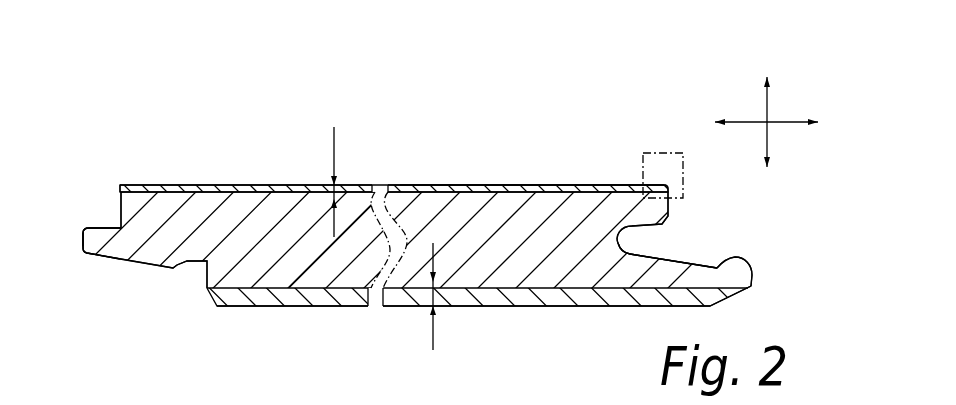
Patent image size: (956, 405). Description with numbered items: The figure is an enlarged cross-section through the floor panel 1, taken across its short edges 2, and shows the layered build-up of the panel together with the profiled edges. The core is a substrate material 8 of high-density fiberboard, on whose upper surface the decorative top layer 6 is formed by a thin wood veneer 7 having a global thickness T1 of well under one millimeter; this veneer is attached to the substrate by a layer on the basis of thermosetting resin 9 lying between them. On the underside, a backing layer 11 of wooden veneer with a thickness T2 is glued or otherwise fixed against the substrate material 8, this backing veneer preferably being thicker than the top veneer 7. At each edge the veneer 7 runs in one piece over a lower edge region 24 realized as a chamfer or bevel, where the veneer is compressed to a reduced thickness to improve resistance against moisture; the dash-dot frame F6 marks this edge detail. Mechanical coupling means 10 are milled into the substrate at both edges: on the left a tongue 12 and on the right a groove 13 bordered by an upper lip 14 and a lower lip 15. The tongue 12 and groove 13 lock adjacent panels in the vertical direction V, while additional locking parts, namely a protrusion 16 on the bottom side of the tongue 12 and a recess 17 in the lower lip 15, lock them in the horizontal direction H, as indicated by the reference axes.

The floor panel 1 is at (336, 328).
The short edge 2 is at (72, 221).
The decorative top layer 6 is at (245, 183).
The wood veneer 7 is at (192, 186).
The substrate material 8 is at (505, 260).
The layer on the basis of thermosetting resin 9 is at (430, 185).
The mechanical coupling means 10 is at (124, 309).
The backing layer 11 is at (270, 305).
The tongue 12 is at (104, 274).
The groove 13 is at (724, 220).
The upper lip 14 is at (667, 219).
The lower lip 15 is at (660, 278).
The protrusion 16 is at (174, 267).
The recess 17 is at (716, 268).
The lower edge region 24 is at (121, 192).
The thickness of the wood veneer T1 is at (334, 128).
The thickness of the backing layer T2 is at (433, 345).
The vertical direction V is at (781, 122).
The horizontal direction H is at (776, 131).
The detail region of FIG. 6 F6 is at (652, 152).